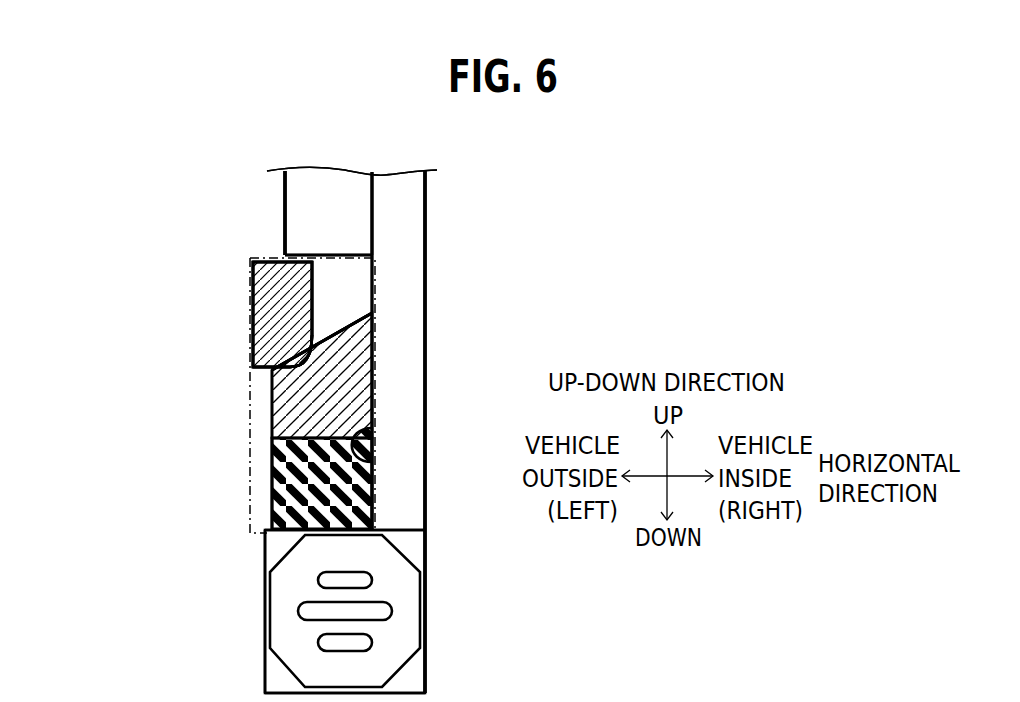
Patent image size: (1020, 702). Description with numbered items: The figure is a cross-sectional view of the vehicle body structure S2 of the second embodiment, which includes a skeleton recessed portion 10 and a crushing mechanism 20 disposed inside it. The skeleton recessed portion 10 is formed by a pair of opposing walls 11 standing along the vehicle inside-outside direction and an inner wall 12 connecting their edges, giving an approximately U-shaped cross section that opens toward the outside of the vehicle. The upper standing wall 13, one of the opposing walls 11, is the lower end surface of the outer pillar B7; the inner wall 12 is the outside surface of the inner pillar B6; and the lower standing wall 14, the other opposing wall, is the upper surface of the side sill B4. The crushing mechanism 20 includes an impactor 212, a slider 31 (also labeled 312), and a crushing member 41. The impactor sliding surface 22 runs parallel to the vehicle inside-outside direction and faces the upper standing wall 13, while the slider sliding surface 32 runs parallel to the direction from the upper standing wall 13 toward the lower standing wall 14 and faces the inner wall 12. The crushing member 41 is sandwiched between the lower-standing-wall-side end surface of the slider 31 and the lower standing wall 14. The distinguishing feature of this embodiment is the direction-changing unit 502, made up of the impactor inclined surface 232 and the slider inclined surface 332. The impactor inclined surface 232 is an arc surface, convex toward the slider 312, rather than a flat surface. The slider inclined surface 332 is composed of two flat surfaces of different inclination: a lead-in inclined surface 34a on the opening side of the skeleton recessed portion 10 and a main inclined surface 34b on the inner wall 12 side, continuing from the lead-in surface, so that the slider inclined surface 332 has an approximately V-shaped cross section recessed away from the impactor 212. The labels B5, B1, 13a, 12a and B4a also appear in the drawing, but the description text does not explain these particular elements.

The vehicle body structure S2 is at (198, 151).
The vehicle body panel portion B5 is at (423, 130).
The vehicle body B1 is at (355, 432).
The outer pillar B7 is at (325, 188).
The inner pillar B6 is at (398, 188).
The impactor sliding surface 22 is at (272, 262).
The contact surface 13a is at (285, 275).
The impactor inclined surface 232 is at (300, 296).
The direction-changing unit 502 is at (312, 316).
The impactor 212 is at (283, 330).
The lead-in inclined surface 34a is at (270, 366).
The slider inclined surface 332 is at (312, 341).
The crushing mechanism 20 is at (250, 408).
The slider sliding surface 32 is at (362, 378).
The slider 31 is at (362, 415).
The slider 312 is at (275, 425).
The crushing member 41 is at (283, 493).
The protrusion 12a is at (363, 467).
The upper standing wall 13 is at (337, 257).
The opposing walls 11 is at (355, 432).
The skeleton recessed portion 10 is at (355, 432).
The inner wall 12 is at (373, 306).
The main inclined surface 34b is at (365, 328).
The lower standing wall 14 is at (290, 530).
The side sill B4 is at (427, 560).
The opening B4a is at (402, 607).